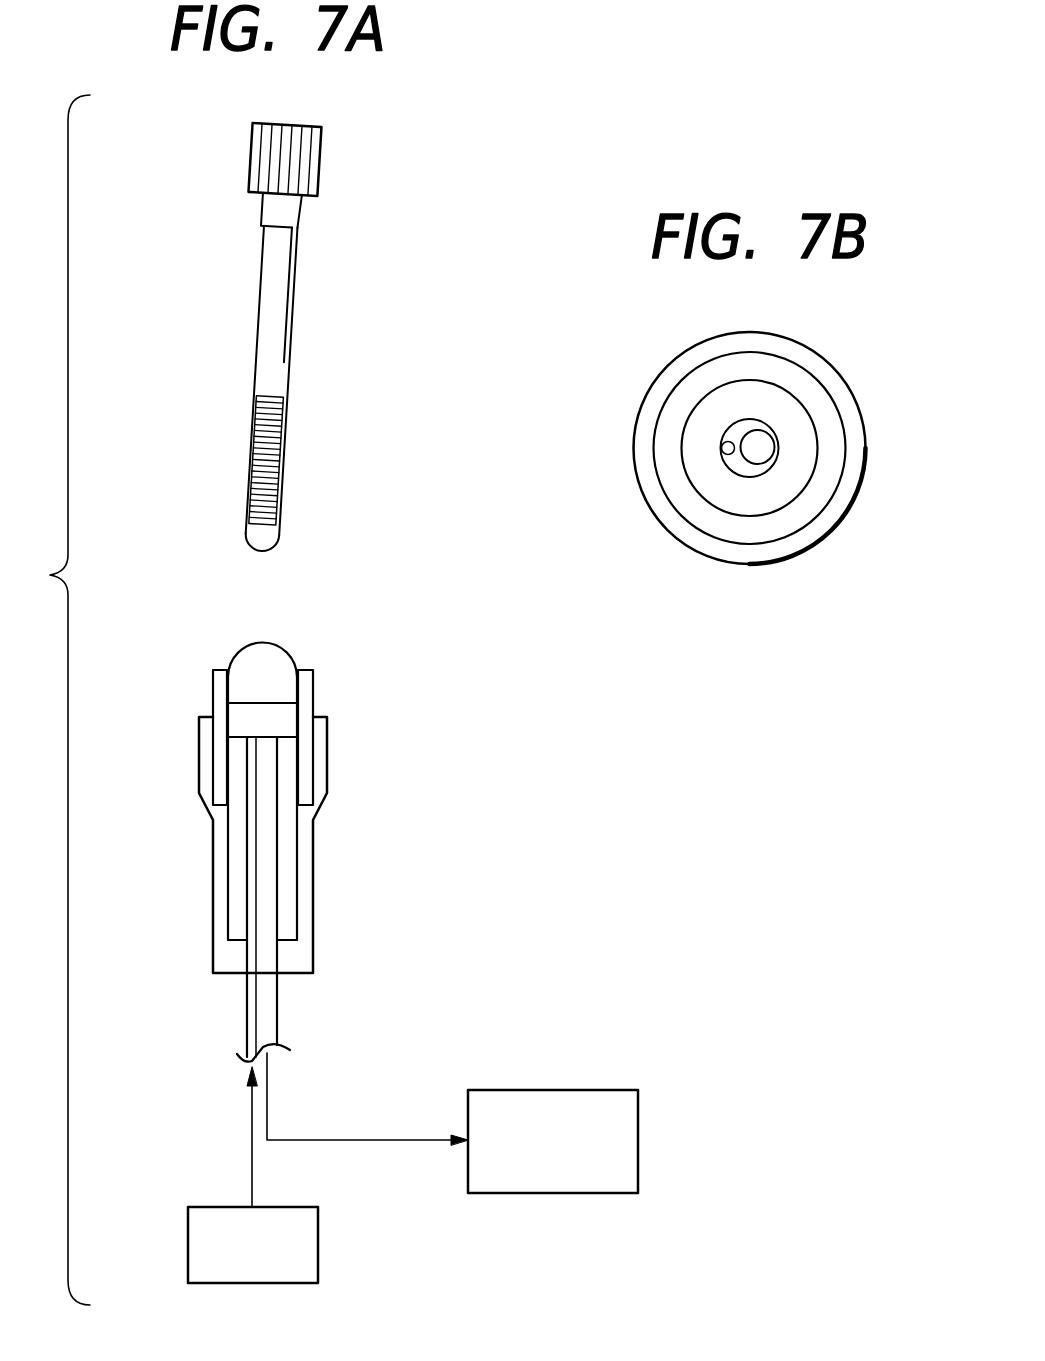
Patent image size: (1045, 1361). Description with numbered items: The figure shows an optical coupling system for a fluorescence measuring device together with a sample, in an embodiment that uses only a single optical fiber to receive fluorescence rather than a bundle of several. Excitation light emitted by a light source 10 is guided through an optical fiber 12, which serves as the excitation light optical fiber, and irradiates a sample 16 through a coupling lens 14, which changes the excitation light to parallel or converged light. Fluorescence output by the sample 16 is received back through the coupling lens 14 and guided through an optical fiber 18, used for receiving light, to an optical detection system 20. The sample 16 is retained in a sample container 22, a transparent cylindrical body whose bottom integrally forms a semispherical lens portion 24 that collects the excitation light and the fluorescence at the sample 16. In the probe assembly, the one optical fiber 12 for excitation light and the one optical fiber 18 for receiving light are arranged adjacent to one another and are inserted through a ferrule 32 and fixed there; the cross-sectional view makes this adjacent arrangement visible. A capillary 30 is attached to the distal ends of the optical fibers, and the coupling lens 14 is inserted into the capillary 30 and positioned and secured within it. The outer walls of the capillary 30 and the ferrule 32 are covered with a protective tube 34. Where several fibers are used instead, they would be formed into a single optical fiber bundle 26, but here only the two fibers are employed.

In FIG. 7A, the light source 10 is at (318, 1240).
In FIG. 7A, the optical fiber 12 is at (248, 1003).
In FIG. 7B, the optical fiber 12 is at (728, 449).
In FIG. 7A, the coupling lens 14 is at (272, 662).
In FIG. 7A, the sample 16 is at (287, 468).
In FIG. 7A, the optical fiber 18 is at (263, 902).
In FIG. 7B, the optical fiber 18 is at (755, 448).
In FIG. 7A, the optical detection system 20 is at (565, 1193).
In FIG. 7A, the sample container 22 is at (295, 323).
In FIG. 7A, the semispherical lens portion 24 is at (258, 545).
In FIG. 7A, the optical fiber bundle 26 is at (220, 867).
In FIG. 7A, the capillary 30 is at (303, 770).
In FIG. 7B, the capillary 30 is at (730, 524).
In FIG. 7A, the ferrule 32 is at (286, 843).
In FIG. 7B, the ferrule 32 is at (801, 435).
In FIG. 7A, the protective tube 34 is at (307, 920).
In FIG. 7B, the protective tube 34 is at (659, 392).